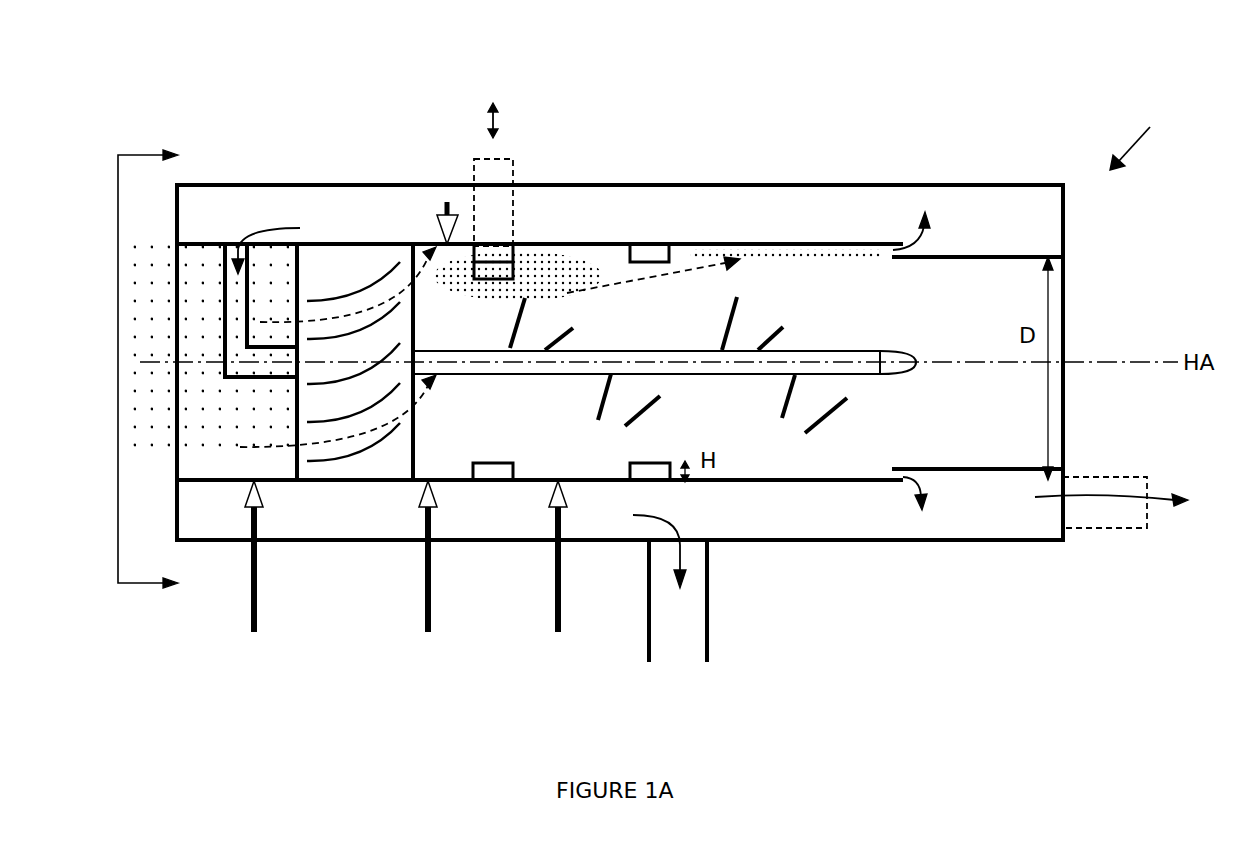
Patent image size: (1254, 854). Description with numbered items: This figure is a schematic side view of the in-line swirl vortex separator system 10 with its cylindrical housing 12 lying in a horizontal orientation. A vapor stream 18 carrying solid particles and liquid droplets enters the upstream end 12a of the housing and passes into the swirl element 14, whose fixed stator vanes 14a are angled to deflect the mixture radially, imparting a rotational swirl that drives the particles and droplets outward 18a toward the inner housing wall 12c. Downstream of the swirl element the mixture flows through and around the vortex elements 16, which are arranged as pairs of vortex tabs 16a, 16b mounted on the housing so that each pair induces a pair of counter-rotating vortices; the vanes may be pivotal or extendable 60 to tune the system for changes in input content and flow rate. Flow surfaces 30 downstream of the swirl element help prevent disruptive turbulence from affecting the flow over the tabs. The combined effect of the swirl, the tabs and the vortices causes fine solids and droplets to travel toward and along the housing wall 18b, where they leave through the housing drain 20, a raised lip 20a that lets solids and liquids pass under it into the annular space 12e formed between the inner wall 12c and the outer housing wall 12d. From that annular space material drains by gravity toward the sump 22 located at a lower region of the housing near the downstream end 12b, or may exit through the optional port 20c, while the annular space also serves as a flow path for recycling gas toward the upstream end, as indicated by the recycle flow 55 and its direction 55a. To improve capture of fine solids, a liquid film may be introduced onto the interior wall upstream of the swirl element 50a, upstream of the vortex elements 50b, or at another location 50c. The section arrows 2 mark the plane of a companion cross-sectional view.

The section line 2 is at (165, 373).
The system 10 is at (1143, 133).
The cylindrical housing 12 is at (1023, 213).
The upstream end of the housing 12a is at (166, 317).
The downstream end of the housing 12b is at (1136, 410).
The inner housing wall 12c is at (722, 485).
The outer housing wall 12d is at (1013, 545).
The annular space 12e is at (803, 505).
The swirl element 14 is at (343, 300).
The stator vanes 14a is at (348, 462).
The vortex elements 16 is at (497, 470).
The vortex tab 16a is at (737, 303).
The vortex tab 16b is at (762, 345).
The vapor stream 18 is at (214, 410).
The radial particle movement 18a is at (535, 272).
The flow along the housing 18b is at (752, 248).
The housing drain 20 is at (892, 483).
The raised lip 20a is at (914, 245).
The optional port 20c is at (1098, 528).
The sump 22 is at (670, 611).
The flow surfaces 30 is at (916, 355).
The liquid introduction upstream of the swirl element 50a is at (253, 576).
The liquid introduction upstream of the vortex elements 50b is at (433, 576).
The liquid introduction at another location 50c is at (560, 576).
The injector 55 is at (238, 300).
The injector flow 55a is at (437, 200).
The adjustable vane 60 is at (506, 174).